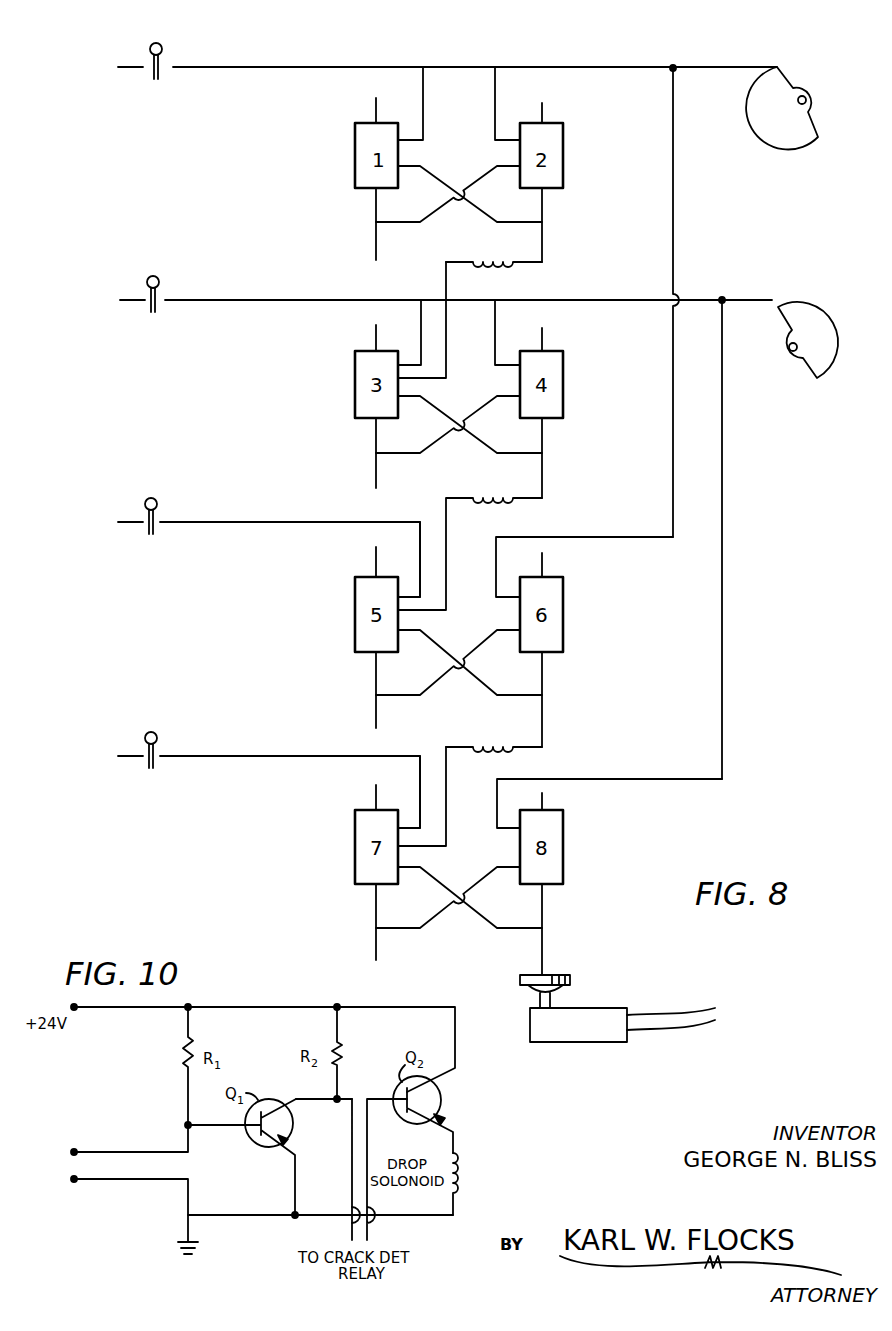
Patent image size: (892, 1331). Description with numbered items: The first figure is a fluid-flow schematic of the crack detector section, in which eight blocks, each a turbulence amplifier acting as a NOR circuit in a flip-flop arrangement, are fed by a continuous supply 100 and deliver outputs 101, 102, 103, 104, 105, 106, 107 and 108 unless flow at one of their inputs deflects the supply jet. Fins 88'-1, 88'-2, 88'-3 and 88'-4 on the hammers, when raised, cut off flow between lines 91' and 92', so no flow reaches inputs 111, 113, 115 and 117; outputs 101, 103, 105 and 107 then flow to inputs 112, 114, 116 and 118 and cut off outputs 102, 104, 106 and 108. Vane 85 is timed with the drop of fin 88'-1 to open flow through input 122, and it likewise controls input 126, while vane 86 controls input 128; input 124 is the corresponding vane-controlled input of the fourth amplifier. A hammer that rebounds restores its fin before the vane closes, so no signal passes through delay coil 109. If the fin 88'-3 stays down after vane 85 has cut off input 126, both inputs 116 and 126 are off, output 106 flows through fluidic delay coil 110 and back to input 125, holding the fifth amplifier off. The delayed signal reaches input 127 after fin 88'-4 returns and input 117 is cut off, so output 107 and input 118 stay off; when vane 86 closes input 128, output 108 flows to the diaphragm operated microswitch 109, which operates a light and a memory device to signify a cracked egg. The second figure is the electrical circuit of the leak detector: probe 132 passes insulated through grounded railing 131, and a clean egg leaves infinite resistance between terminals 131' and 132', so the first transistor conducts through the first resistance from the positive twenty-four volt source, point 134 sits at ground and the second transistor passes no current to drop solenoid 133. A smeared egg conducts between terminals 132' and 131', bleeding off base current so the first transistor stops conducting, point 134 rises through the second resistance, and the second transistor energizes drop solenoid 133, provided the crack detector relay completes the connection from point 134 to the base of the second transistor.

In FIG. 8, the vane 85 is at (803, 142).
In FIG. 8, the vane 86 is at (832, 372).
In FIG. 8, the fin 88'-1 is at (141, 83).
In FIG. 8, the fin 88'-2 is at (145, 314).
In FIG. 8, the fin 88'-3 is at (151, 541).
In FIG. 8, the fin 88'-4 is at (154, 773).
In FIG. 8, the line 91' is at (118, 44).
In FIG. 8, the line 92' is at (475, 46).
In FIG. 8, the supply 100 is at (376, 100).
In FIG. 8, the output 101 is at (376, 212).
In FIG. 8, the output 102 is at (542, 210).
In FIG. 8, the output 103 is at (376, 439).
In FIG. 8, the output 104 is at (545, 440).
In FIG. 8, the output 105 is at (376, 674).
In FIG. 8, the output 106 is at (545, 672).
In FIG. 8, the output 107 is at (376, 908).
In FIG. 8, the output 108 is at (545, 910).
In FIG. 8, the diaphragm operated microswitch 109 is at (518, 265).
In FIG. 8, the fluidic delay coil 110 is at (513, 748).
In FIG. 8, the input 111 is at (412, 133).
In FIG. 8, the input 112 is at (500, 165).
In FIG. 8, the input 113 is at (412, 365).
In FIG. 8, the input 114 is at (515, 396).
In FIG. 8, the input 115 is at (413, 591).
In FIG. 8, the input 116 is at (515, 630).
In FIG. 8, the input 117 is at (410, 818).
In FIG. 8, the input 118 is at (503, 868).
In FIG. 8, the input 122 is at (508, 137).
In FIG. 8, the input 124 is at (507, 368).
In FIG. 8, the input 125 is at (419, 630).
In FIG. 8, the input 126 is at (506, 596).
In FIG. 8, the input 127 is at (420, 846).
In FIG. 8, the input 128 is at (507, 830).
In FIG. 10, the railing 131 is at (117, 1198).
In FIG. 10, the terminal 131' is at (51, 1167).
In FIG. 10, the probe 132 is at (129, 1136).
In FIG. 10, the terminal 132' is at (51, 1141).
In FIG. 10, the drop solenoid 133 is at (461, 1192).
In FIG. 10, the point 134 is at (336, 1104).